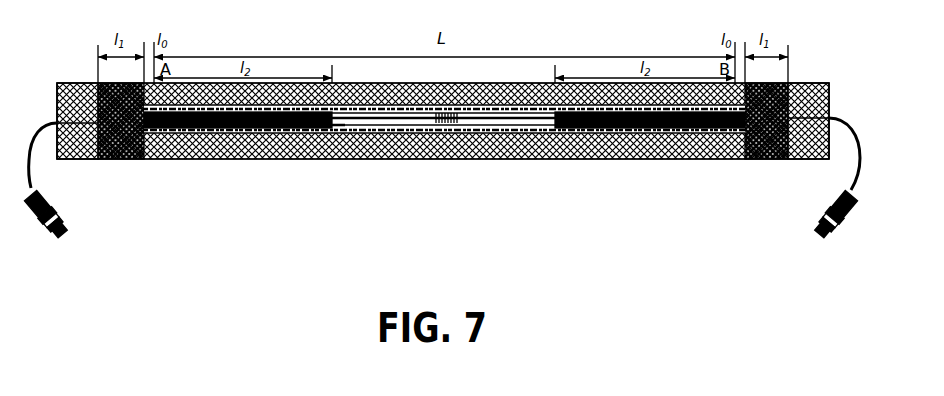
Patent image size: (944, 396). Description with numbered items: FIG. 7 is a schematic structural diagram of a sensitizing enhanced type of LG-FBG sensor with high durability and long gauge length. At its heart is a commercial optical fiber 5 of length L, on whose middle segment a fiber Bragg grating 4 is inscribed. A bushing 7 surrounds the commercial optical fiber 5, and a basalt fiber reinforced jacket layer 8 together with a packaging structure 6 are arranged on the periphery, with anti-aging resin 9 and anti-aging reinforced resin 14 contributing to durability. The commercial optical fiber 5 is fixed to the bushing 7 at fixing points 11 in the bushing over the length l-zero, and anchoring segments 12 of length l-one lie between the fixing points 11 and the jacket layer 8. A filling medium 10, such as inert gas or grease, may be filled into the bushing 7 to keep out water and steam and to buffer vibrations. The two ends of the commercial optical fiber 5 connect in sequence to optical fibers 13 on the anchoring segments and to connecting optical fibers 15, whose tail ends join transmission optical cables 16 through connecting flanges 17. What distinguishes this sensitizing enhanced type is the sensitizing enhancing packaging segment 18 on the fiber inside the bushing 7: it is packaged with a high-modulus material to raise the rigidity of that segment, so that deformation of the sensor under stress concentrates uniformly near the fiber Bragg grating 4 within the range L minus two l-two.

The fiber Bragg grating 4 is at (460, 136).
The commercial optical fiber 5 is at (500, 140).
The packaging structure 6 is at (562, 161).
The bushing 7 is at (608, 140).
The basalt fiber reinforced jacket layer 8 is at (430, 138).
The anti-aging resin 9 is at (398, 138).
The filling medium 10 is at (370, 140).
The fixing point in bushing 11 is at (178, 150).
The anchoring segment 12 is at (752, 160).
The optical fiber on anchoring segment 13 is at (146, 160).
The anti-aging reinforced resin 14 is at (775, 158).
The connecting optical fiber 15 is at (88, 158).
The transmission optical cable 16 is at (37, 152).
The connecting flange 17 is at (66, 228).
The sensitizing enhancing packaging segment 18 is at (270, 137).